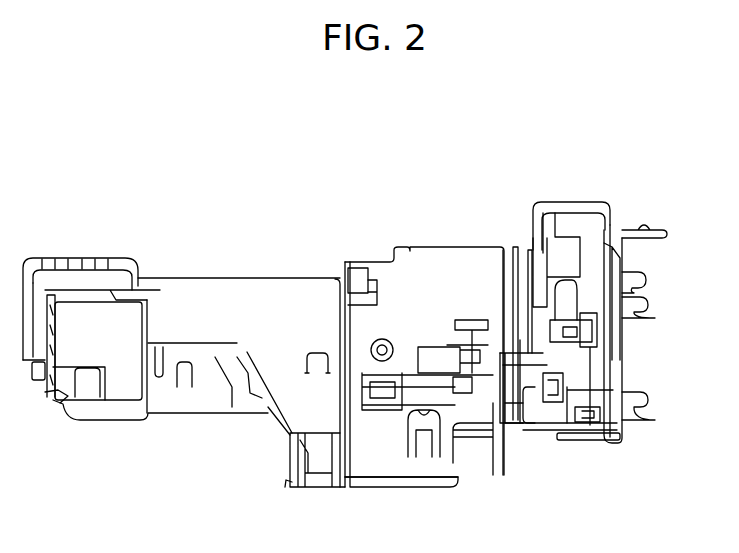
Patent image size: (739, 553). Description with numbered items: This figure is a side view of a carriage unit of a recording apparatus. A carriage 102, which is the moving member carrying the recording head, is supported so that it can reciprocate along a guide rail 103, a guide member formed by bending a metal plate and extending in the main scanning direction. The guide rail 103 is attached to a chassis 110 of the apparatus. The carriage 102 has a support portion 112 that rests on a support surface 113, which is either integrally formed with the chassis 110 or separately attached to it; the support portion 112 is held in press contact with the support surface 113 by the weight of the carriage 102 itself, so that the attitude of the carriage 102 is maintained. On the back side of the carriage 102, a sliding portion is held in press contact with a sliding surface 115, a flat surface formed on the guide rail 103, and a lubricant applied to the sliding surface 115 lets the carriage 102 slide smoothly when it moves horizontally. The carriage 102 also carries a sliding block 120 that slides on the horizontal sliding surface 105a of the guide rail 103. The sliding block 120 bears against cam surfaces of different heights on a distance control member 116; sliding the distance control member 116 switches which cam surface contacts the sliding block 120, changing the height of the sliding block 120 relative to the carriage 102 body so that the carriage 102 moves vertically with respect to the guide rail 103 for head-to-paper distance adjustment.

The carriage 102 is at (462, 255).
The support portion 112 is at (535, 242).
The support surface 113 is at (540, 225).
The chassis 110 is at (623, 348).
The distance control member 116 is at (613, 375).
The sliding block 120 is at (590, 440).
The horizontal sliding surface 105a is at (562, 413).
The guide rail 103 is at (535, 433).
The sliding surface 115 is at (515, 407).